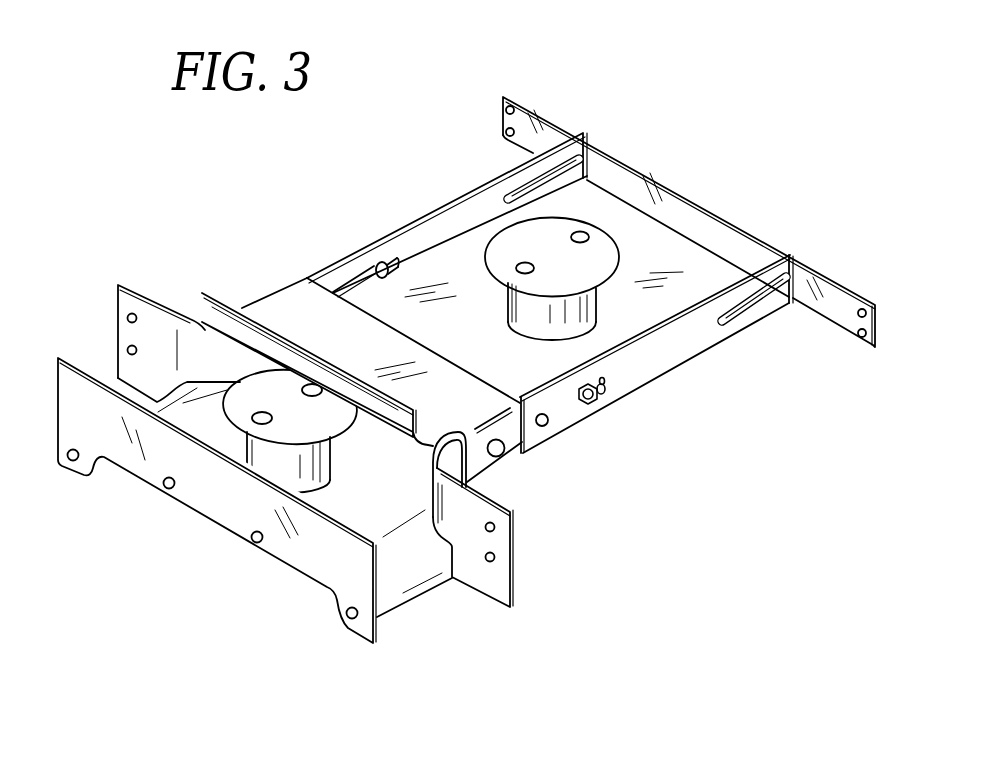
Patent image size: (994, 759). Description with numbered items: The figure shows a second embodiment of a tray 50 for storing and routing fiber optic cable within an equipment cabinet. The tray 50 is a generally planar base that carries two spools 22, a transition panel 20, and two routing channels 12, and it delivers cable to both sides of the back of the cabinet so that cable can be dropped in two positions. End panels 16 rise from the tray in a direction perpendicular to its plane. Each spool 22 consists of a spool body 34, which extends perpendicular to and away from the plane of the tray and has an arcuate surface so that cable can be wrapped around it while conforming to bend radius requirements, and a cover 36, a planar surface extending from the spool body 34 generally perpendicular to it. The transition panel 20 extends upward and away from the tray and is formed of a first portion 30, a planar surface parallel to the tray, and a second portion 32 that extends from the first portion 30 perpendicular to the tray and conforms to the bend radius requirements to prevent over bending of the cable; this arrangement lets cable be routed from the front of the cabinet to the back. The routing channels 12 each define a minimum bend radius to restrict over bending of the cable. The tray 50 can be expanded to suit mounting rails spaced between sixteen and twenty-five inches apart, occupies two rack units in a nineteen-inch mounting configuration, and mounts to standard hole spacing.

The routing channel 12 is at (157, 400).
The end panel 16 is at (213, 508).
The transition panel 20 is at (291, 302).
The spool 22 is at (604, 318).
The first portion 30 is at (322, 315).
The second portion 32 is at (204, 292).
The spool body 34 is at (574, 322).
The cover 36 is at (520, 245).
The tray 50 is at (604, 508).